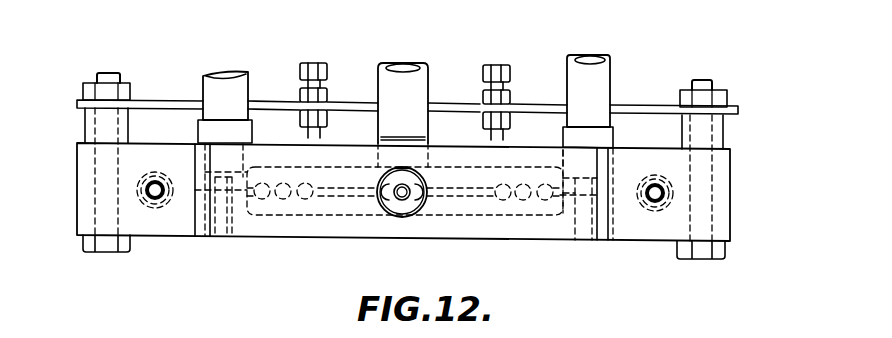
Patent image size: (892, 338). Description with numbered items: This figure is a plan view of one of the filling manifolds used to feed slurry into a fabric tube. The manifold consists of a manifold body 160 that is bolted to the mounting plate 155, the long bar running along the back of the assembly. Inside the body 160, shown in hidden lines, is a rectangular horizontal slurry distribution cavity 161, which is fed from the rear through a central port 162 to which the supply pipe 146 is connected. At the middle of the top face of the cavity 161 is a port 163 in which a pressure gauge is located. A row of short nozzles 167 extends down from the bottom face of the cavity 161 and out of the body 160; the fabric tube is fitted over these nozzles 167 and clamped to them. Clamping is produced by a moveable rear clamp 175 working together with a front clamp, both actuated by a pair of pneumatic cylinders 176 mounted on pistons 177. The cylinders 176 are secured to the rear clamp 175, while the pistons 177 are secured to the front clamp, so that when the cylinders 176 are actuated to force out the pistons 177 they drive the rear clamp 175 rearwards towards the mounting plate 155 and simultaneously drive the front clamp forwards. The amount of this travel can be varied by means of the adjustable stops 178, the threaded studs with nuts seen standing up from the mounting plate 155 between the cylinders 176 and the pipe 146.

The pipe 146 is at (418, 78).
The mounting plate 155 is at (657, 110).
The manifold body 160 is at (173, 210).
The slurry distribution cavity 161 is at (485, 212).
The central port 162 is at (421, 162).
The port 163 is at (400, 217).
The nozzles 167 is at (290, 215).
The rear clamp 175 is at (537, 163).
The pneumatic cylinders 176 is at (243, 78).
The pistons 177 is at (226, 237).
The adjustable stops 178 is at (328, 87).